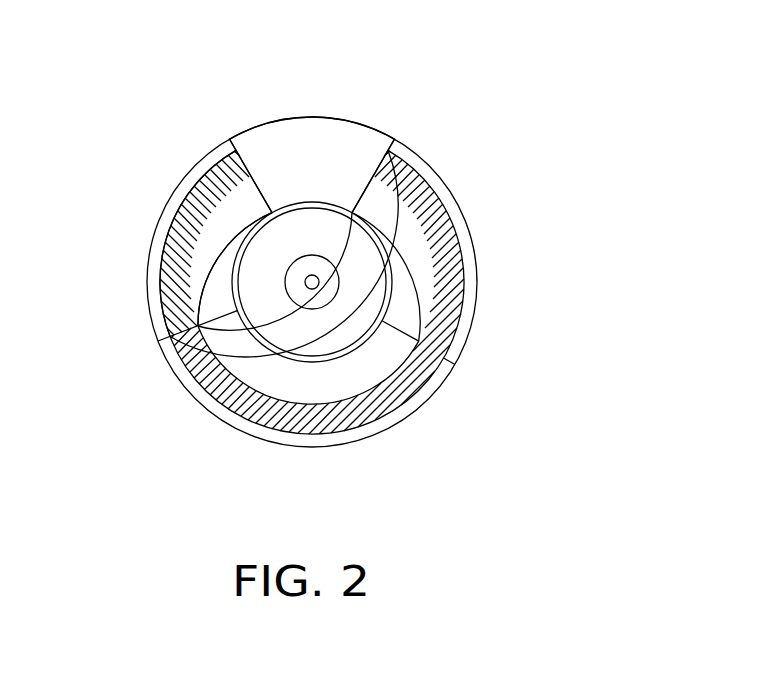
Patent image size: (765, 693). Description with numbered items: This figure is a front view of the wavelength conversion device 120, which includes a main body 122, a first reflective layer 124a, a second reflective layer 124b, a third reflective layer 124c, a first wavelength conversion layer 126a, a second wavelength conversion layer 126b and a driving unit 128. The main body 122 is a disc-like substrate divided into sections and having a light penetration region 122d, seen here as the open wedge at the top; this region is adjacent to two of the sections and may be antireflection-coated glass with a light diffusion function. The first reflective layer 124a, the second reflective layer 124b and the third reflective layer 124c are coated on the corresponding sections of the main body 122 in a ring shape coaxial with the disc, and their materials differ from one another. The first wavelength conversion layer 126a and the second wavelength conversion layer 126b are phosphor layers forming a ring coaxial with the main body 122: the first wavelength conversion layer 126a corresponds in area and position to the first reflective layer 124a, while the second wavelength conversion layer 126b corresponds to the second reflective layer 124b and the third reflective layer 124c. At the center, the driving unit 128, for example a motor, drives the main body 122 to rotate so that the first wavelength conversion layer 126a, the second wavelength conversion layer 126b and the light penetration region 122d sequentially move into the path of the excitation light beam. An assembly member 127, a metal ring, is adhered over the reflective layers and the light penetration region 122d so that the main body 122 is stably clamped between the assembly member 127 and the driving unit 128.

The wavelength conversion device 120 is at (535, 379).
The main body 122 is at (266, 104).
The light penetration region 122d is at (338, 140).
The first reflective layer 124a is at (215, 267).
The second reflective layer 124b is at (384, 357).
The third reflective layer 124c is at (413, 262).
The first wavelength conversion layer 126a is at (187, 213).
The second wavelength conversion layer 126b is at (341, 414).
The assembly member 127 is at (297, 316).
The driving unit 128 is at (293, 288).